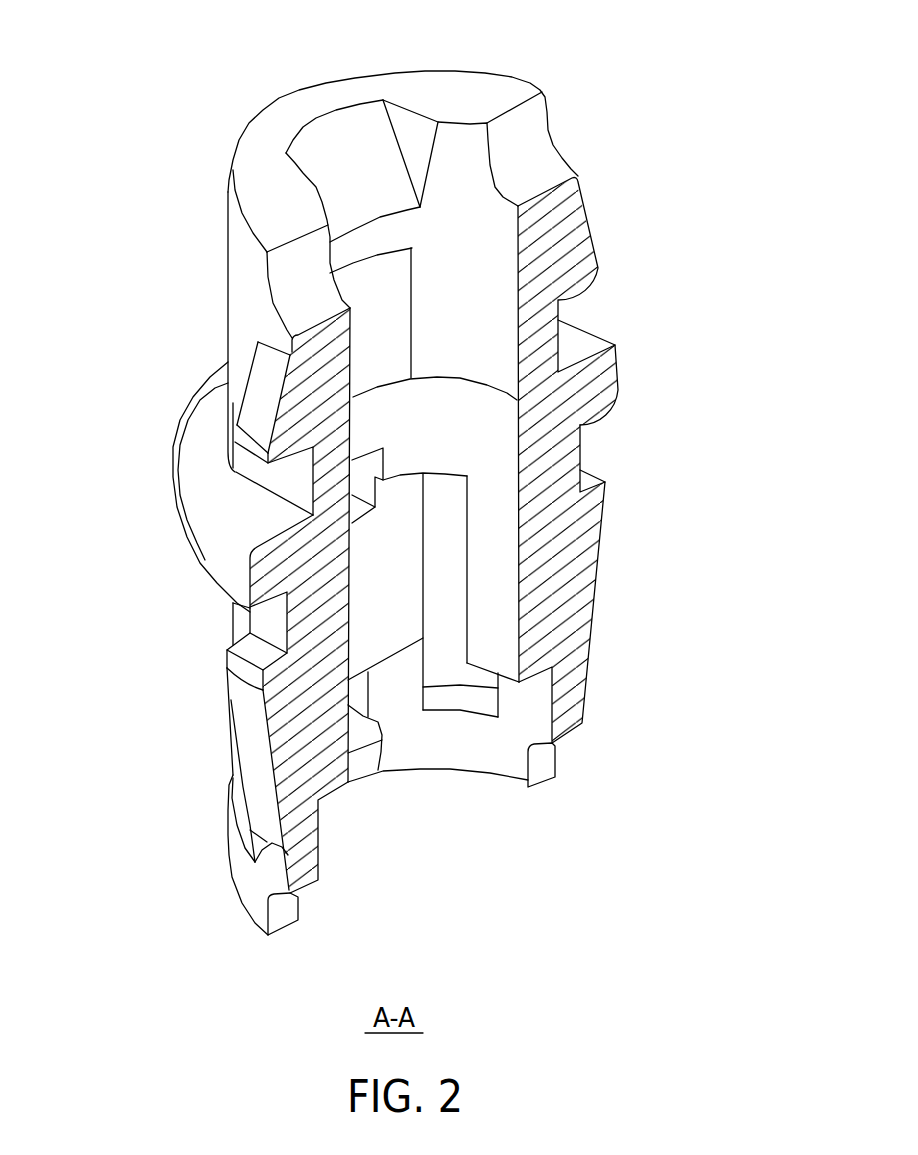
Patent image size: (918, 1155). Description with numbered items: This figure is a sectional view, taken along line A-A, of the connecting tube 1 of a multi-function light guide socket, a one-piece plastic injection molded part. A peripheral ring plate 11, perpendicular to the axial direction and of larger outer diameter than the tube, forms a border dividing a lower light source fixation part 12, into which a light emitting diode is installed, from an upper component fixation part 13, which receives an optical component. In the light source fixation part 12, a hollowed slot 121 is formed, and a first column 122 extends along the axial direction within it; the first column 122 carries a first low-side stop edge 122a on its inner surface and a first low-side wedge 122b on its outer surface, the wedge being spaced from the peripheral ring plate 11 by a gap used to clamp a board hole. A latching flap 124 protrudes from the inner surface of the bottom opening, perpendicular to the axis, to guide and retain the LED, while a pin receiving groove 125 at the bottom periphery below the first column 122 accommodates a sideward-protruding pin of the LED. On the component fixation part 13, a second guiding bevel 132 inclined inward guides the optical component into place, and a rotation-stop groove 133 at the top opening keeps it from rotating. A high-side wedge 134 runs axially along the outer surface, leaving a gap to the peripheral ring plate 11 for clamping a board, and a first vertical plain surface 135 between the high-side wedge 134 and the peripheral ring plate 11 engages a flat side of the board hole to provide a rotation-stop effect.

The connecting tube 1 is at (698, 125).
The peripheral ring plate 11 is at (150, 487).
The light source fixation part 12 is at (646, 428).
The component fixation part 13 is at (643, 100).
The hollowed slot 121 is at (423, 681).
The first column 122 is at (210, 769).
The first low-side stop edge 122a is at (335, 860).
The first low-side wedge 122b is at (196, 761).
The latching flap 124 is at (394, 690).
The pin receiving groove 125 is at (584, 817).
The second guiding bevel 132 is at (339, 189).
The rotation-stop groove 133 is at (527, 120).
The high-side wedge 134 is at (181, 405).
The first vertical plain surface 135 is at (197, 537).